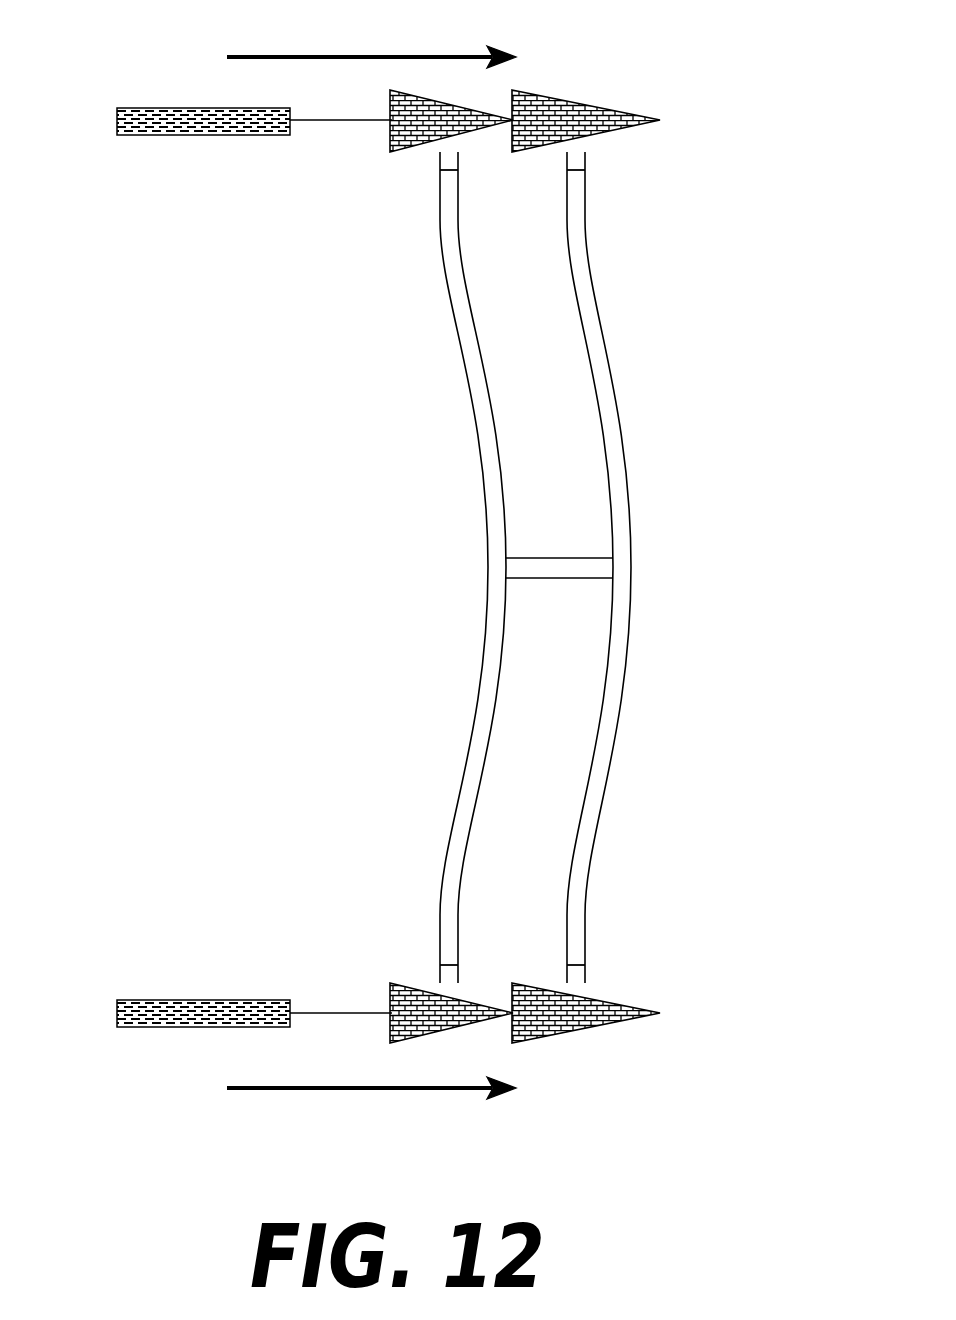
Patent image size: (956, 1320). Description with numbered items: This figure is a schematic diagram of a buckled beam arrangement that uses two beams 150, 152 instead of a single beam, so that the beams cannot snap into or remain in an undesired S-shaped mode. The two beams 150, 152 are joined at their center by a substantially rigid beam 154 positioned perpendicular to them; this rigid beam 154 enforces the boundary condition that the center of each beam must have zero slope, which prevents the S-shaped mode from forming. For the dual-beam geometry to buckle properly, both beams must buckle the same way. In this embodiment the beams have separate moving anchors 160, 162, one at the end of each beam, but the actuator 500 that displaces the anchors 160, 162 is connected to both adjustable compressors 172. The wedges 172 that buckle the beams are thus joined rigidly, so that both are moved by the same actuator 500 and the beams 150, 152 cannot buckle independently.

The beam 150 is at (490, 470).
The beam 152 is at (617, 700).
The substantially rigid beam 154 is at (558, 580).
The moving anchor 160 is at (445, 155).
The moving anchor 162 is at (577, 155).
The adjustable compressor 172 is at (550, 97).
The actuator 500 is at (170, 131).